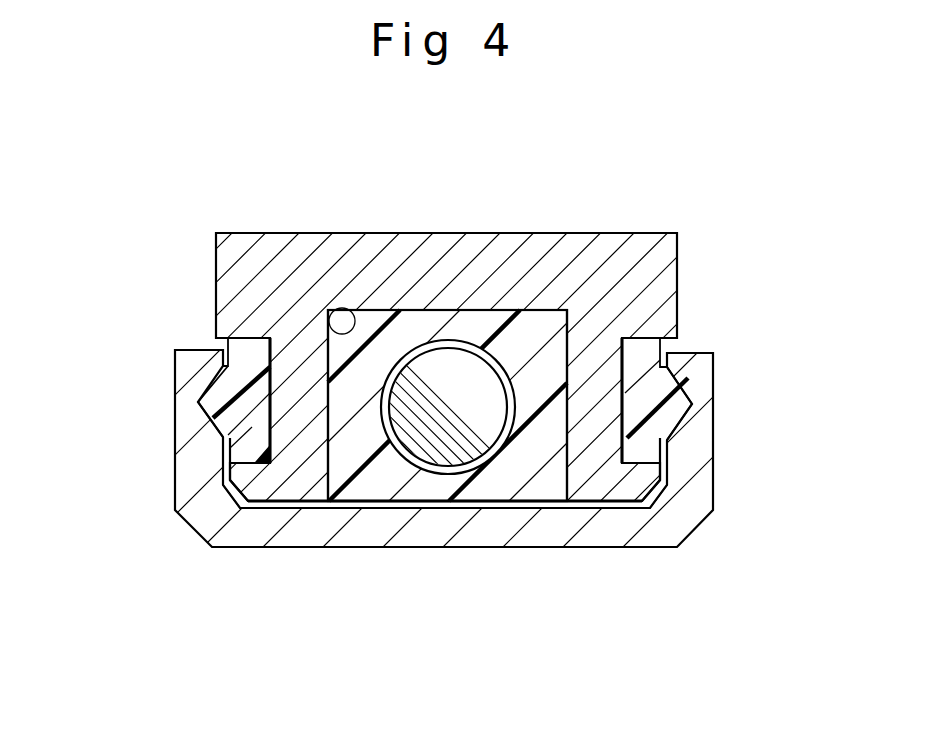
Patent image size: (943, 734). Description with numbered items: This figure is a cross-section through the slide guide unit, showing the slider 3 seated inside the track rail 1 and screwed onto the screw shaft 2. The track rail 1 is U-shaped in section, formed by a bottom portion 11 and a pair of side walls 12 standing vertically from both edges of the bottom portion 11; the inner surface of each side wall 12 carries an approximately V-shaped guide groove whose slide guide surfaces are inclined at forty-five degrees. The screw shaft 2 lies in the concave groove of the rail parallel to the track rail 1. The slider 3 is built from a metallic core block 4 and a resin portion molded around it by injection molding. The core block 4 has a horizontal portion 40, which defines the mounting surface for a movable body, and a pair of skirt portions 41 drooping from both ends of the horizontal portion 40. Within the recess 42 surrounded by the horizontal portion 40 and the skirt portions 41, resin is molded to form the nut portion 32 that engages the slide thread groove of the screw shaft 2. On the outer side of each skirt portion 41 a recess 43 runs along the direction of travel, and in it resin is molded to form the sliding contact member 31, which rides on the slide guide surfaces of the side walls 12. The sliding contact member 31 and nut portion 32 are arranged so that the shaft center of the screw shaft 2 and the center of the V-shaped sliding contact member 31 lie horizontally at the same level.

The track rail 1 is at (527, 581).
The screw shaft 2 is at (438, 363).
The slider 3 is at (686, 229).
The core block 4 is at (214, 231).
The bottom portion 11 is at (408, 530).
The side wall 12 is at (183, 428).
The sliding contact portion 31 is at (207, 393).
The nut portion 32 is at (547, 320).
The horizontal portion 40 is at (498, 236).
The skirt portion 41 is at (296, 490).
The recess 42 is at (335, 322).
The recess 43 is at (265, 428).